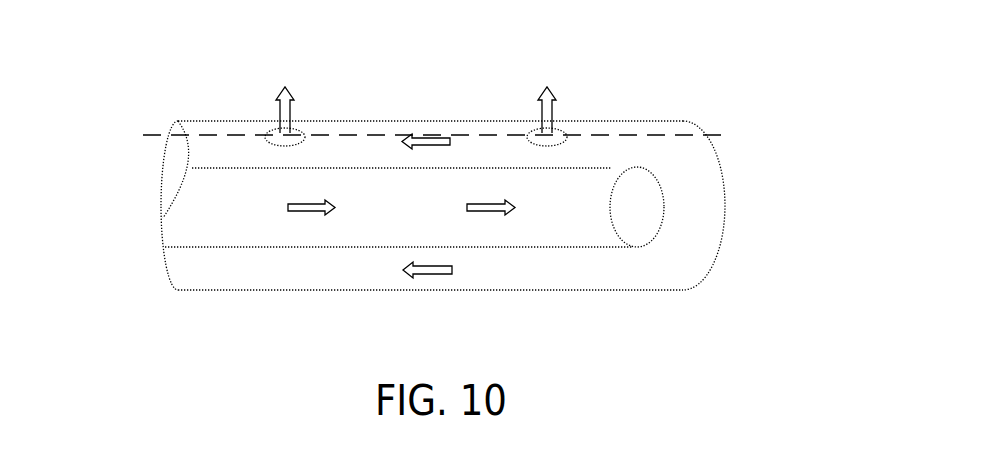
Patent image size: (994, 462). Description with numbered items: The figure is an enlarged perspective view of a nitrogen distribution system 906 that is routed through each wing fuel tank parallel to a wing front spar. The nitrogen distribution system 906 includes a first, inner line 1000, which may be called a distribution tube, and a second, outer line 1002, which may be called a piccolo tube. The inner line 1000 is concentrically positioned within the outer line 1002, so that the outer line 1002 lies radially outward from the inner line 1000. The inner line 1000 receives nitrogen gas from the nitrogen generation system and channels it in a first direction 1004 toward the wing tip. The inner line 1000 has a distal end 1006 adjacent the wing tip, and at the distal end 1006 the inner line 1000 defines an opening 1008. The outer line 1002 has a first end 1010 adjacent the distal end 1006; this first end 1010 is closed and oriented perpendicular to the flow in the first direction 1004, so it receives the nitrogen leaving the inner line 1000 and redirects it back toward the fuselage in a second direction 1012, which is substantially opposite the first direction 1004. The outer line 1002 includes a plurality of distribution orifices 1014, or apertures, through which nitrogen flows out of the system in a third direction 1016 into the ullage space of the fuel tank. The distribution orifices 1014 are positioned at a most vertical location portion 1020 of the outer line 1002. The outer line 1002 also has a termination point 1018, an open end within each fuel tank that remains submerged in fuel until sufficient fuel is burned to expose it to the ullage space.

The nitrogen distribution system 906 is at (693, 42).
The inner line 1000 is at (207, 247).
The outer line 1002 is at (315, 290).
The first direction 1004 is at (314, 216).
The distal end 1006 is at (670, 227).
The opening 1008 is at (648, 202).
The first end 1010 is at (718, 165).
The second direction 1012 is at (423, 134).
The distribution orifices 1014 is at (278, 142).
The third direction 1016 is at (280, 115).
The termination point 1018 is at (176, 90).
The most vertical location portion 1020 is at (150, 134).